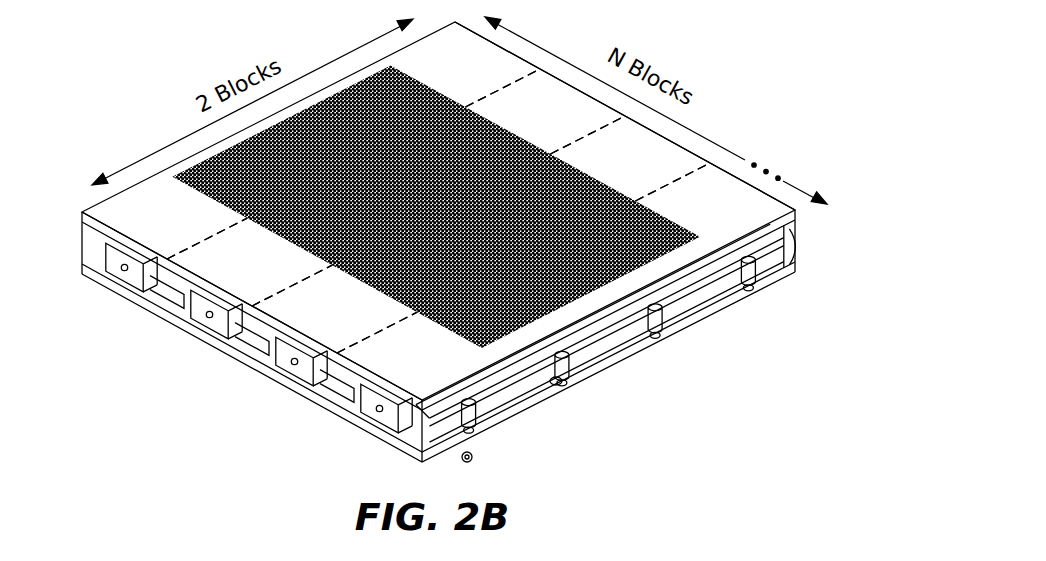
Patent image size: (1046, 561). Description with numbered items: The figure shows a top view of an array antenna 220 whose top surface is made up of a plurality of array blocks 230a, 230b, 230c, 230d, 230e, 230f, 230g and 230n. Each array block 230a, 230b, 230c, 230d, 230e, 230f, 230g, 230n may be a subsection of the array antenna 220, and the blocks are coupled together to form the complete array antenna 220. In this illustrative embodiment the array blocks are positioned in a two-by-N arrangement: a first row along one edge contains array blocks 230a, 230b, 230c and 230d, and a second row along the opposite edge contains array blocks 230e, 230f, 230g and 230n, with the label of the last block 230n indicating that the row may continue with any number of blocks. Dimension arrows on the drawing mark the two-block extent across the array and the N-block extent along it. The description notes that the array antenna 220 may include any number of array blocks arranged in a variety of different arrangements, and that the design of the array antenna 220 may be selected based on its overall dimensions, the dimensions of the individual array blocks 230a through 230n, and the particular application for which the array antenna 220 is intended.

The array antenna 220 is at (188, 453).
The array block 230a is at (134, 228).
The array block 230b is at (274, 274).
The array block 230c is at (304, 322).
The array block 230d is at (444, 368).
The array block 230e is at (488, 76).
The array block 230f is at (518, 122).
The array block 230g is at (658, 170).
The array block 230n is at (688, 216).